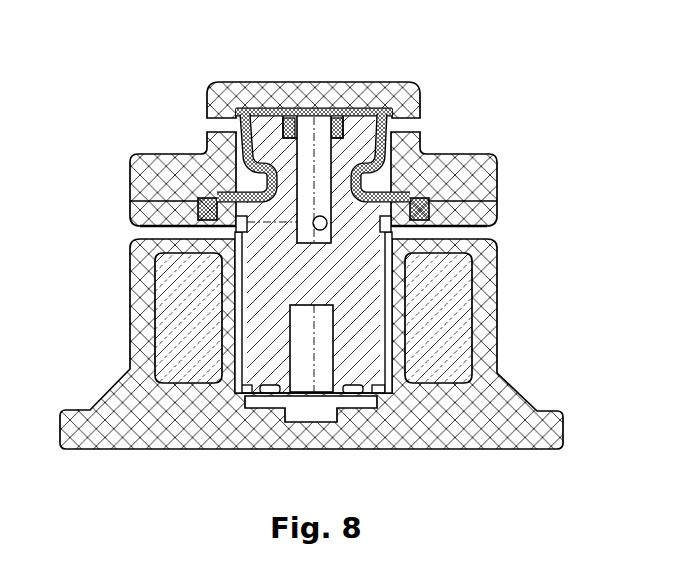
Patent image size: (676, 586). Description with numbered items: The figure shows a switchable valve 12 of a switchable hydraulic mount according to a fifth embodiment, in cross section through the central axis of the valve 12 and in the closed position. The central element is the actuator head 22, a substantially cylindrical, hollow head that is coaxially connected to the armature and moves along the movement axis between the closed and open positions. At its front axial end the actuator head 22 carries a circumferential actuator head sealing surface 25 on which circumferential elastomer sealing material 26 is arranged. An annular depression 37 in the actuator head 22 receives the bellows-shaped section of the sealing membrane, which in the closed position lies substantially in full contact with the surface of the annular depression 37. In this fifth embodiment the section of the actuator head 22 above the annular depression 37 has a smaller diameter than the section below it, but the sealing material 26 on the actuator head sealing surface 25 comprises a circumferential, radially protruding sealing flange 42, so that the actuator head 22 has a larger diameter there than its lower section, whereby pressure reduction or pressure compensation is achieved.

The switchable valve 12 is at (103, 122).
The actuator head 22 is at (352, 278).
The actuator head sealing surface 25 is at (362, 110).
The elastomer sealing material 26 is at (266, 109).
The annular depression 37 is at (368, 180).
The sealing flange 42 is at (236, 112).